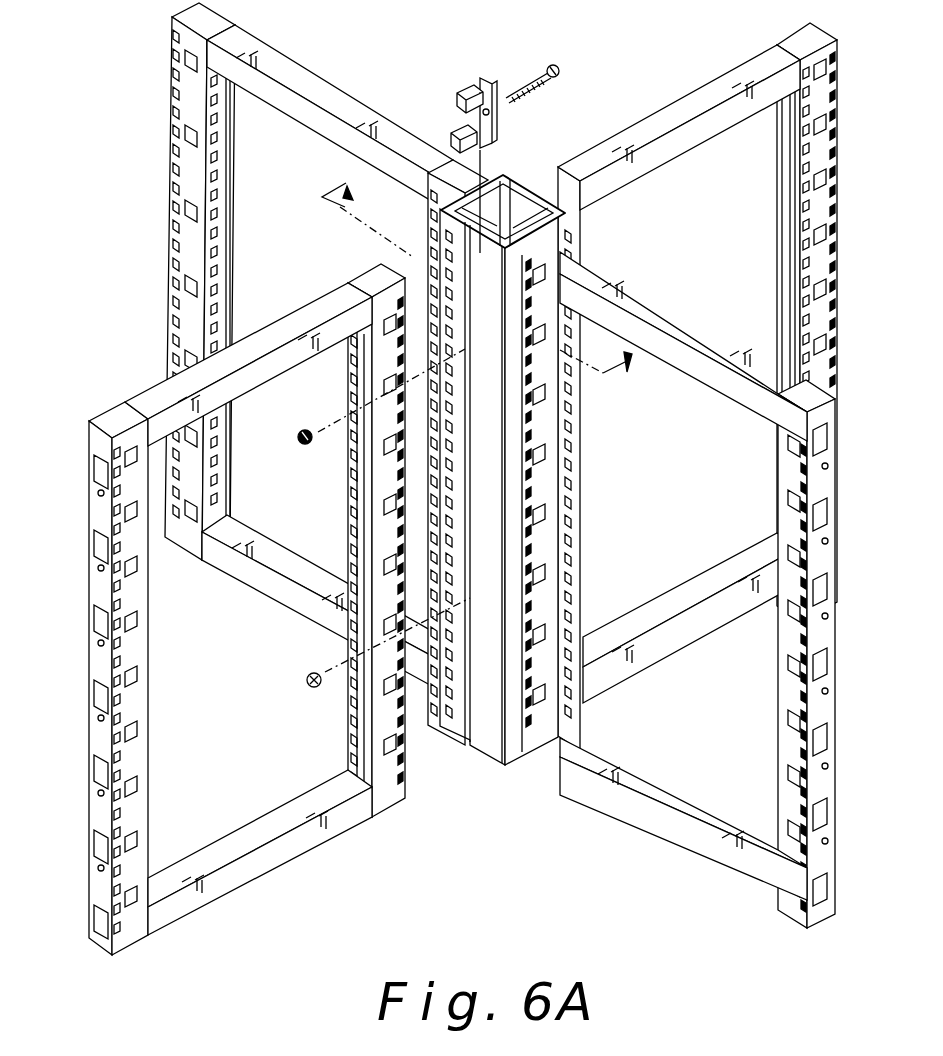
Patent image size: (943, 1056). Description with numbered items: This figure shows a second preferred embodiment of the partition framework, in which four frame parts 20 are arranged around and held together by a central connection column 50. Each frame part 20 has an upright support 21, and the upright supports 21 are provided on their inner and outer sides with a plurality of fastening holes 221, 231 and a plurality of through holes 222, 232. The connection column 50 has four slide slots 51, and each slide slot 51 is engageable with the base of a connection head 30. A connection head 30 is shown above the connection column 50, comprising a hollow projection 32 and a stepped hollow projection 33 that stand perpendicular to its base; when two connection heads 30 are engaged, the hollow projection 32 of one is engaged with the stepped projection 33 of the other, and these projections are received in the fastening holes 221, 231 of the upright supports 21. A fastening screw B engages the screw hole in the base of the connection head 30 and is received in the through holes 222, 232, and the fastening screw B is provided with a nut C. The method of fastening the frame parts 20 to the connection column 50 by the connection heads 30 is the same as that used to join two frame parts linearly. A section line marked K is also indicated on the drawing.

The frame part 20 is at (218, 590).
The upright support 21 is at (218, 590).
The fastening hole 221 is at (361, 694).
The through hole 222 is at (361, 738).
The fastening hole 231 is at (99, 603).
The through hole 232 is at (98, 632).
The connection head 30 is at (462, 133).
The hollow projection 32 is at (469, 88).
The stepped hollow projection 33 is at (454, 129).
The connection column 50 is at (477, 447).
The slide slot 51 is at (451, 452).
The fastening screw B is at (550, 78).
The nut C is at (303, 447).
The section line K is at (484, 288).